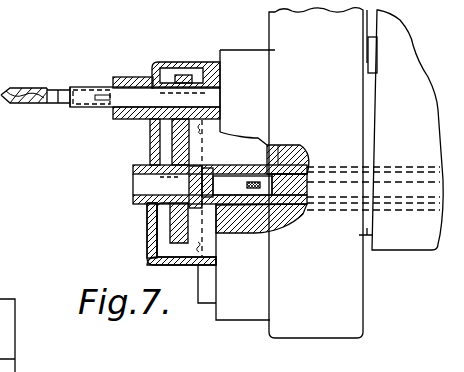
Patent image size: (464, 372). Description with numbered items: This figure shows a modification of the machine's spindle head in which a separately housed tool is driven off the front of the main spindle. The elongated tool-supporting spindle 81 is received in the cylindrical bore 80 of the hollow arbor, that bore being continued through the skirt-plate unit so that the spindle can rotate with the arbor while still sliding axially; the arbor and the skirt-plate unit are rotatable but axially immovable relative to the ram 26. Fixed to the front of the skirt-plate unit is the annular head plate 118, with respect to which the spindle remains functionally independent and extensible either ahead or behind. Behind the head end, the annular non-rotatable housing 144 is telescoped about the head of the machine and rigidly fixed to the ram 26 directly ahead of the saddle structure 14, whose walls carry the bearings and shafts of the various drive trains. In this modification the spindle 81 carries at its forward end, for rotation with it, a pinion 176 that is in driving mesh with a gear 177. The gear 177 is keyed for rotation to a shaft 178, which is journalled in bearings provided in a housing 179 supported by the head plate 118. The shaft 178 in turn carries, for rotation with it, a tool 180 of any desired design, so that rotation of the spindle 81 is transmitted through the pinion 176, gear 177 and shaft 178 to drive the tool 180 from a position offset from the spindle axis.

The saddle structure 14 is at (407, 130).
The ram 26 is at (367, 235).
The cylindrical bore 80 is at (289, 213).
The tool-supporting spindle 81 is at (296, 167).
The head plate 118 is at (243, 50).
The housing 144 is at (323, 173).
The pinion 176 is at (170, 231).
The gear 177 is at (188, 77).
The shaft 178 is at (128, 97).
The housing 179 is at (150, 141).
The tool 180 is at (27, 101).